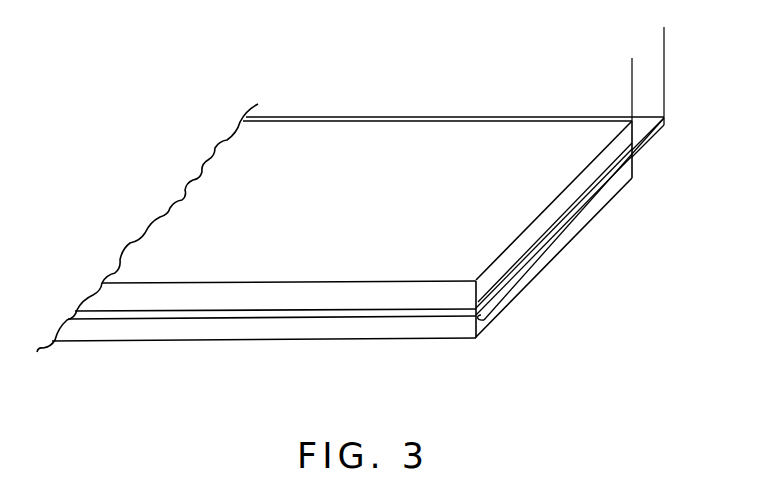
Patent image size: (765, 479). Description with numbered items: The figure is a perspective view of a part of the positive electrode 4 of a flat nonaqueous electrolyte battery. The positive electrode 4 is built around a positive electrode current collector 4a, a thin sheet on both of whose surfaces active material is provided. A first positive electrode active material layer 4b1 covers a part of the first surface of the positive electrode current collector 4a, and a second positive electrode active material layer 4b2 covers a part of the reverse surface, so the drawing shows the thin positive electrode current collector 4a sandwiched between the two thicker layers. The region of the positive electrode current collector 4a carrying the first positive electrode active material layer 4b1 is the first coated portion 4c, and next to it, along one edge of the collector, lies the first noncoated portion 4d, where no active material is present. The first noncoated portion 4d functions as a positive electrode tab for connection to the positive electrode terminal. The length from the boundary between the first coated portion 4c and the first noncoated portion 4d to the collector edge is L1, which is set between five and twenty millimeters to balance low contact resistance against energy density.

The positive electrode 4 is at (381, 210).
The positive electrode current collector 4a is at (337, 313).
The first positive electrode active material layer 4b1 is at (388, 293).
The second positive electrode active material layer 4b2 is at (437, 332).
The first coated portion 4c is at (568, 244).
The first noncoated portion 4d is at (660, 126).
The length from the boundary between the first coated portion and the first noncoate L1 is at (663, 42).